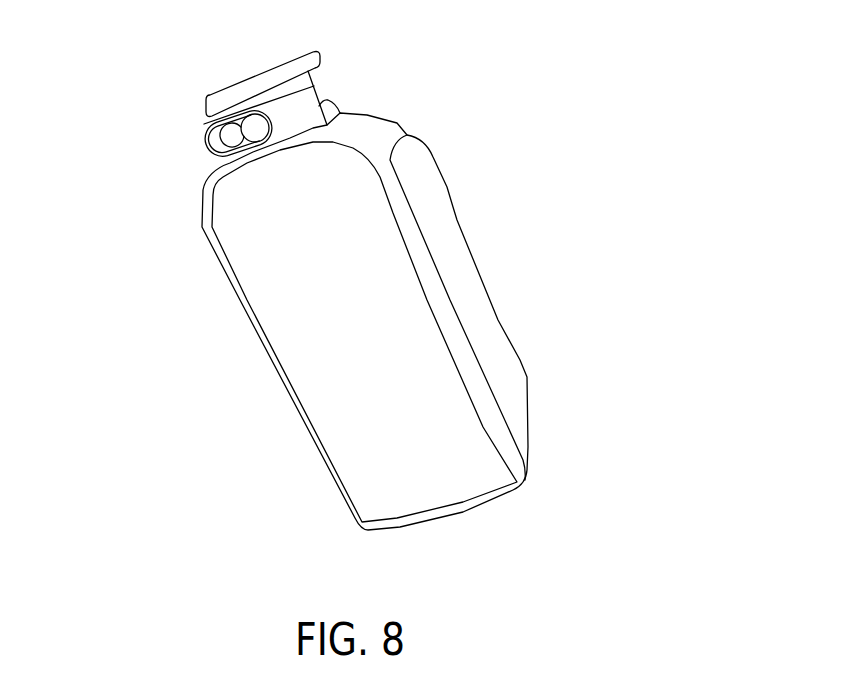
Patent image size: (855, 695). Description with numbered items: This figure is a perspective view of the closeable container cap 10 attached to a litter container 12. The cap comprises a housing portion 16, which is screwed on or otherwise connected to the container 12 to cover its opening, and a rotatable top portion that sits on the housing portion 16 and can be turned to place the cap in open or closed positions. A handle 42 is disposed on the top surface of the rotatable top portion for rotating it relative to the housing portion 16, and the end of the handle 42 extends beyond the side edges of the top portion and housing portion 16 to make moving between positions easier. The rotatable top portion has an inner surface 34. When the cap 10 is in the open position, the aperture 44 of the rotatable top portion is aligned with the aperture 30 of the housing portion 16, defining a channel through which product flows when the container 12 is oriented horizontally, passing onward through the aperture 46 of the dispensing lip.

The closeable container cap 10 is at (153, 51).
The litter container 12 is at (432, 156).
The housing portion 16 is at (313, 88).
The aperture of housing portion 30 is at (223, 161).
The inner surface 34 is at (253, 135).
The handle 42 is at (278, 72).
The aperture of rotatable top portion 44 is at (243, 127).
The aperture of dispensing lip 46 is at (205, 145).